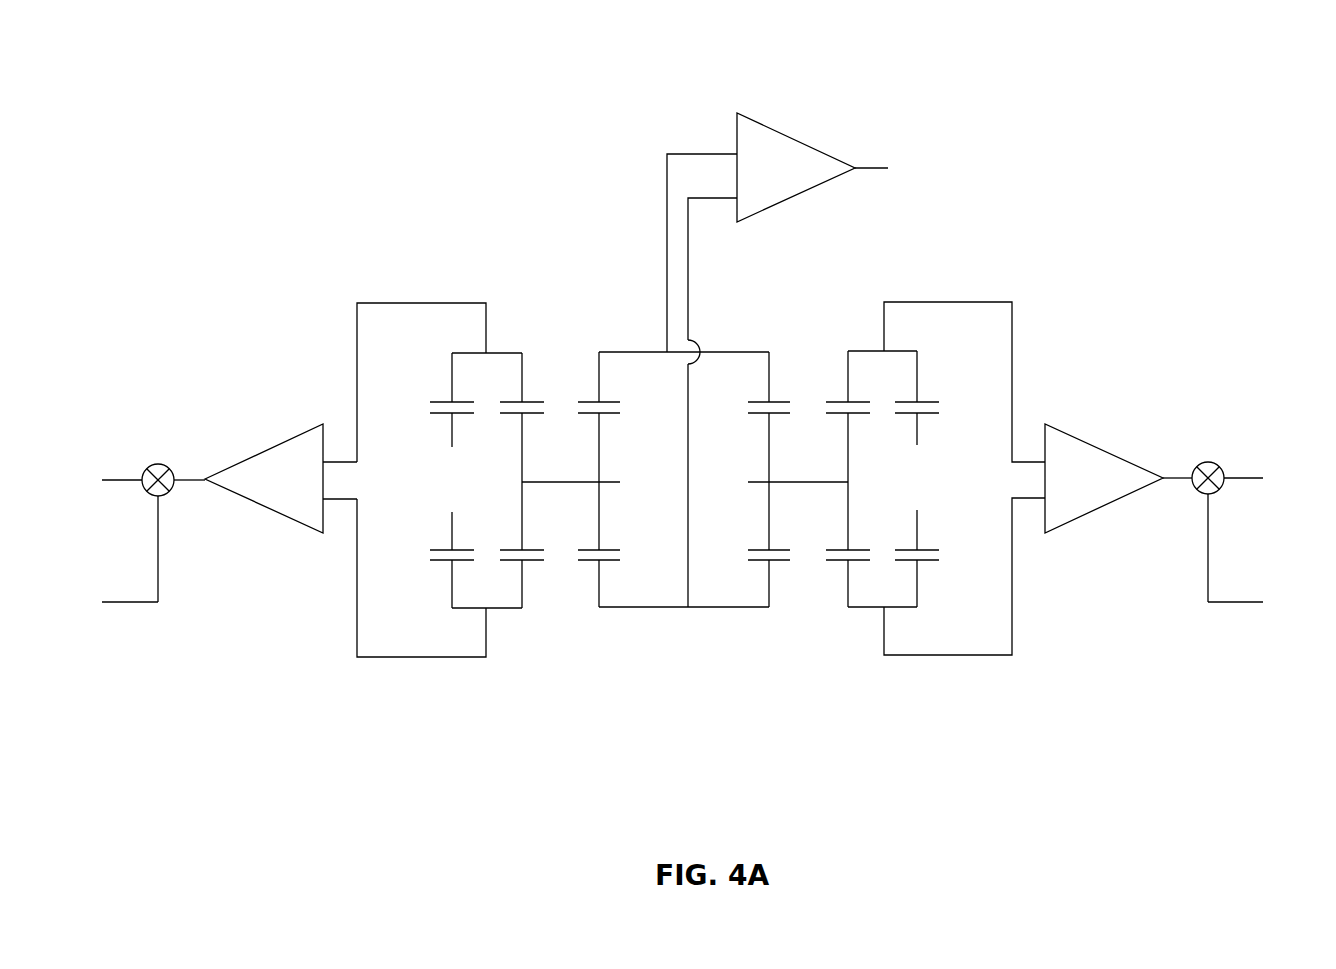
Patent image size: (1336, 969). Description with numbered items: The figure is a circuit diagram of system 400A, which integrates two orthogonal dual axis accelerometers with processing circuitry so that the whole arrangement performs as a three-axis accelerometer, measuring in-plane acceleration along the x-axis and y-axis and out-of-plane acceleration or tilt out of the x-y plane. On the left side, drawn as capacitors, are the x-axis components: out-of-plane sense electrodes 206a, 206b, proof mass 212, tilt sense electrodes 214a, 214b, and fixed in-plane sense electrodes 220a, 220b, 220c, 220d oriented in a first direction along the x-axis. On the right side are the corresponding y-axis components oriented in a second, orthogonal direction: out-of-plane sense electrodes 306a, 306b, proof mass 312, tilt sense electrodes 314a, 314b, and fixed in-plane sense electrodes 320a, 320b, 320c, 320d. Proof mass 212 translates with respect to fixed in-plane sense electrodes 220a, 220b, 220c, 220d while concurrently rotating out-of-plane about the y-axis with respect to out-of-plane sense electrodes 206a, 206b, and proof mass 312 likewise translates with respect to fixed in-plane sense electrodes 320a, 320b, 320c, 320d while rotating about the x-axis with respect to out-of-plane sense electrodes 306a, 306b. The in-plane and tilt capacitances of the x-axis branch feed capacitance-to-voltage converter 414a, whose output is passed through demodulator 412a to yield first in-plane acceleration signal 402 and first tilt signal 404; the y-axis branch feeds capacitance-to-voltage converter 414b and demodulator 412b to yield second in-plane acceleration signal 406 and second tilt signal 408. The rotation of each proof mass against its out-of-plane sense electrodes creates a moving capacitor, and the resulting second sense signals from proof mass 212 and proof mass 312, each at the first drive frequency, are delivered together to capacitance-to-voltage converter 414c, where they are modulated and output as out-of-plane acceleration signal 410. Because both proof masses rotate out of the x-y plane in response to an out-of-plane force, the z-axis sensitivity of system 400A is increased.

The system 400A is at (272, 92).
The first in-plane acceleration signal 402 is at (125, 482).
The first tilt signal 404 is at (130, 603).
The second in-plane acceleration signal 406 is at (1243, 480).
The second tilt signal 408 is at (1235, 602).
The out-of-plane acceleration signal 410 is at (870, 167).
The demodulator 412a is at (150, 463).
The demodulator 412b is at (1215, 463).
The capacitance-to-voltage converter 414a is at (260, 505).
The capacitance-to-voltage converter 414b is at (1100, 510).
The capacitance-to-voltage converter 414c is at (760, 125).
The out-of-plane sense electrode 206a is at (657, 352).
The out-of-plane sense electrode 206b is at (660, 608).
The out-of-plane sense electrode 306a is at (717, 352).
The out-of-plane sense electrode 306b is at (717, 608).
The proof mass 212 is at (610, 483).
The proof mass 312 is at (760, 482).
The tilt sense electrode 214a is at (452, 433).
The tilt sense electrode 214b is at (452, 525).
The tilt sense electrode 314a is at (917, 430).
The tilt sense electrode 314b is at (917, 527).
The fixed in-plane sense electrode 220a is at (450, 303).
The fixed in-plane sense electrode 220b is at (449, 375).
The fixed in-plane sense electrode 220c is at (381, 657).
The fixed in-plane sense electrode 220d is at (518, 589).
The fixed in-plane sense electrode 320a is at (964, 302).
The fixed in-plane sense electrode 320b is at (937, 391).
The fixed in-plane sense electrode 320c is at (945, 657).
The fixed in-plane sense electrode 320d is at (931, 639).